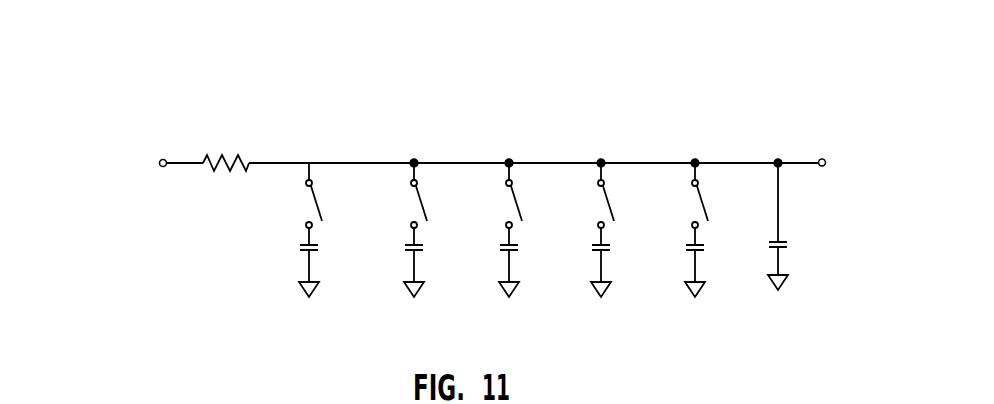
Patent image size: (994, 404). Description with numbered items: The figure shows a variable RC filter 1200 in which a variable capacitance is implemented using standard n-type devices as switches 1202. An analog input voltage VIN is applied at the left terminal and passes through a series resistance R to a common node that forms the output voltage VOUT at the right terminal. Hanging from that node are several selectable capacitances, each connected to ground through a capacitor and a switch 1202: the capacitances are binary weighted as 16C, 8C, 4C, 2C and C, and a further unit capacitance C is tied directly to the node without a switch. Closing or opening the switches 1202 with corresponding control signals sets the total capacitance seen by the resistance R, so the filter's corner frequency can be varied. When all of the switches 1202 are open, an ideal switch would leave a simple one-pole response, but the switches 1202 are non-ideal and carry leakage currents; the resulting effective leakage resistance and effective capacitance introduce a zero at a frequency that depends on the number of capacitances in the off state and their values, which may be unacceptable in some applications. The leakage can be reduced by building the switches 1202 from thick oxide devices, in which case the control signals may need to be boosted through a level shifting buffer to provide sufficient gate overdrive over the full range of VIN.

The variable RC filter 1200 is at (162, 65).
The switch 1202 is at (318, 195).
The resistance R is at (226, 139).
The analog input voltage VIN is at (154, 162).
The output voltage VOUT is at (854, 162).
The selectable capacitance 16C is at (335, 262).
The selectable capacitance 8C is at (431, 262).
The selectable capacitance 4C is at (526, 262).
The selectable capacitance 2C is at (619, 262).
The unit capacitance C is at (756, 230).